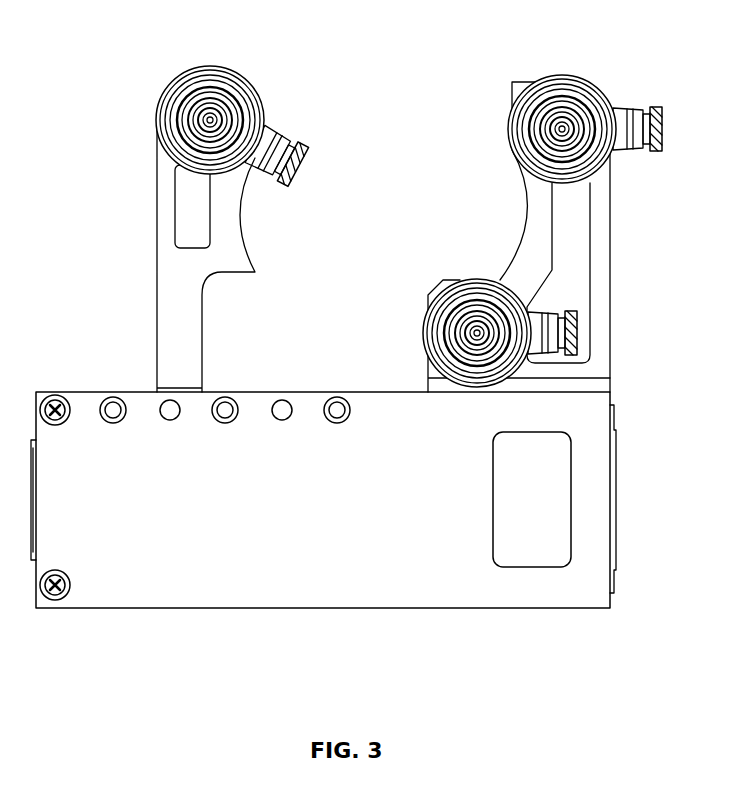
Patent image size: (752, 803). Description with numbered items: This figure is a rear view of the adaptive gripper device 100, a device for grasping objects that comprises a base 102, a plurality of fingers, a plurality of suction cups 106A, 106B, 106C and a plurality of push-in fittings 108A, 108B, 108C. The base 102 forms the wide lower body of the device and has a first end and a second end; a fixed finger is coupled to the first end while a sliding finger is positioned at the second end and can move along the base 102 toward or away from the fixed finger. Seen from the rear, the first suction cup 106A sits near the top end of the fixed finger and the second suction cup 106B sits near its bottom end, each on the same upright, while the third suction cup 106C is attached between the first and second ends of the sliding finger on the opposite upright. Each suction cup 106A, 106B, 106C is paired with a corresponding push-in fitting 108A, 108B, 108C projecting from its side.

The adaptive gripper device 100 is at (359, 367).
The base 102 is at (408, 593).
The first suction cup 106A is at (510, 120).
The second suction cup 106B is at (440, 332).
The third suction cup 106C is at (182, 114).
The push-in fitting 108A is at (620, 108).
The push-in fitting 108B is at (556, 308).
The push-in fitting 108C is at (277, 123).